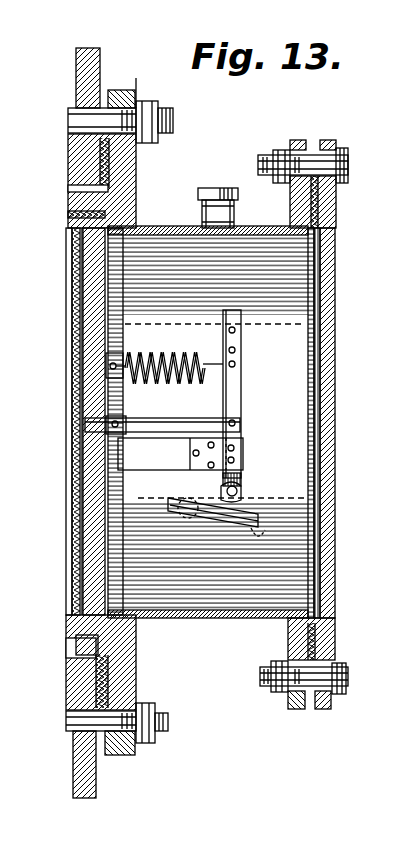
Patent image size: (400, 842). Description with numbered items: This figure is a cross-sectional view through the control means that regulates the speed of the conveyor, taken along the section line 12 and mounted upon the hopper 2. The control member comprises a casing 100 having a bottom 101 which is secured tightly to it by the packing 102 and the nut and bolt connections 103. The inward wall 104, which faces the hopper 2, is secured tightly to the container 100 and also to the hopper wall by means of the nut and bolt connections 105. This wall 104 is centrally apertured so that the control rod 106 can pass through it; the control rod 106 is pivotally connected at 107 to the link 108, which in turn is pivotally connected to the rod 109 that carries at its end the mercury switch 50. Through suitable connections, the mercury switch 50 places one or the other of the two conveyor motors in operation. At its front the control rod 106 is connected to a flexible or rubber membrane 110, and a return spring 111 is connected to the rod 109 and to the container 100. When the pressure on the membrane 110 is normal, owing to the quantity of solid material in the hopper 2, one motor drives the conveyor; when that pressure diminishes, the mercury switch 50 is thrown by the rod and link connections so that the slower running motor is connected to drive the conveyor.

The hopper 2 is at (68, 62).
The section line 12- 12 is at (268, 220).
The mercury switch 50 is at (262, 517).
The casing 100 is at (197, 610).
The bottom 101 is at (327, 484).
The packing 102 is at (328, 204).
The nut and bolt connections 103 is at (266, 150).
The inward wall 104 is at (96, 306).
The nut and bolt connections 105 is at (166, 104).
The control rod 106 is at (96, 412).
The pivotal connection 107 is at (117, 428).
The link 108 is at (164, 416).
The rod 109 is at (234, 394).
The flexible or rubber membrane 110 is at (63, 338).
The return spring 111 is at (170, 349).